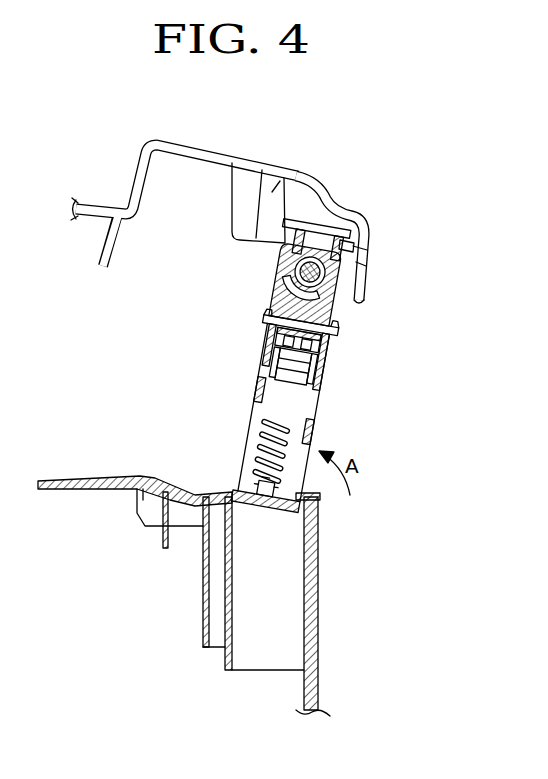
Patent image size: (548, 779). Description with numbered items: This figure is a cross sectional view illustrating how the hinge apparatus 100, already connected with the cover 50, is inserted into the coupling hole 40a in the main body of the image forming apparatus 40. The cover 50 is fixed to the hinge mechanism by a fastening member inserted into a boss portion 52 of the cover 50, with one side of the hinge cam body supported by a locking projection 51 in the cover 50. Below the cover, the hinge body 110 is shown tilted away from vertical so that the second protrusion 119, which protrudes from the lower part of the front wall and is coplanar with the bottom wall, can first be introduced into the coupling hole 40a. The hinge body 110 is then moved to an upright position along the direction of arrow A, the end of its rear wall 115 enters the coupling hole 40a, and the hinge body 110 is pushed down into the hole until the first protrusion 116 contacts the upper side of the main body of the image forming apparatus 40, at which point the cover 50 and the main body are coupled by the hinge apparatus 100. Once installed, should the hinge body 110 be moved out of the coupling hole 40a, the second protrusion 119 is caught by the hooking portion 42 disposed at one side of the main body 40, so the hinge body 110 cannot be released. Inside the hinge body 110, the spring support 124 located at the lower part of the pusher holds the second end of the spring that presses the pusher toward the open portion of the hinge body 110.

The main body of the image forming apparatus 40 is at (318, 603).
The coupling hole 40a is at (276, 568).
The hooking portion 42 is at (312, 494).
The cover 50 is at (270, 159).
The locking projection 51 is at (350, 250).
The boss portion 52 is at (312, 178).
The hinge apparatus 100 is at (307, 385).
The hinge body 110 is at (340, 380).
The rear wall 115 is at (244, 464).
The first protrusion 116 is at (342, 325).
The second protrusion 119 is at (300, 508).
The spring support 124 is at (270, 337).